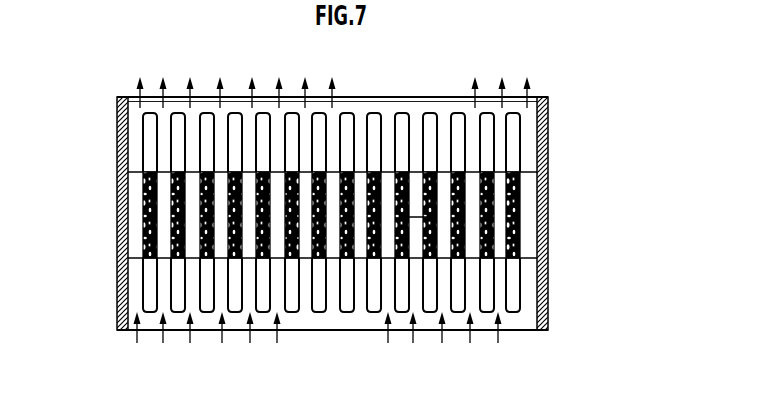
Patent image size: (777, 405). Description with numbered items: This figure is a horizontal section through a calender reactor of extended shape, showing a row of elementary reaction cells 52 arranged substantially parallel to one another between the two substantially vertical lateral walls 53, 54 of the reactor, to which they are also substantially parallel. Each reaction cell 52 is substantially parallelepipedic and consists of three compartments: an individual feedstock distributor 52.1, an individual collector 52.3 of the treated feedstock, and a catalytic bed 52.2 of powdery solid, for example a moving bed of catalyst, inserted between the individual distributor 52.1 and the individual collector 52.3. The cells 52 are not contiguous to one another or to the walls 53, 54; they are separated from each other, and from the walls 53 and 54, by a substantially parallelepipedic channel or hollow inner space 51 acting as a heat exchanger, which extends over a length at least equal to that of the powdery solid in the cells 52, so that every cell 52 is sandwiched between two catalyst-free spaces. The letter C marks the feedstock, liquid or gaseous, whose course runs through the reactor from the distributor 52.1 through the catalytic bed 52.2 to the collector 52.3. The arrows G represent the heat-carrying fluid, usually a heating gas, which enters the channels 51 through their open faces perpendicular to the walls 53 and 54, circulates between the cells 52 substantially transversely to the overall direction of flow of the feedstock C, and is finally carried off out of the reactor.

The channel 51 is at (358, 307).
The elementary reaction cell 52 is at (418, 254).
The individual feedstock distributor 52.1 is at (390, 285).
The catalytic bed 52.2 is at (514, 222).
The individual collector of the treated feedstock 52.3 is at (516, 150).
The wall of the reactor 53 is at (548, 118).
The wall of the reactor 54 is at (117, 122).
The heat-carrying fluid G is at (277, 84).
The feedstock C is at (413, 217).